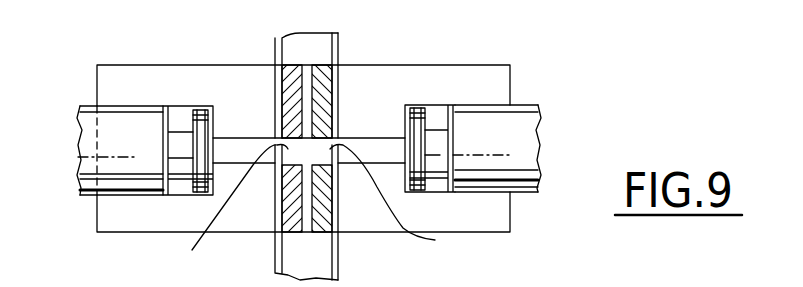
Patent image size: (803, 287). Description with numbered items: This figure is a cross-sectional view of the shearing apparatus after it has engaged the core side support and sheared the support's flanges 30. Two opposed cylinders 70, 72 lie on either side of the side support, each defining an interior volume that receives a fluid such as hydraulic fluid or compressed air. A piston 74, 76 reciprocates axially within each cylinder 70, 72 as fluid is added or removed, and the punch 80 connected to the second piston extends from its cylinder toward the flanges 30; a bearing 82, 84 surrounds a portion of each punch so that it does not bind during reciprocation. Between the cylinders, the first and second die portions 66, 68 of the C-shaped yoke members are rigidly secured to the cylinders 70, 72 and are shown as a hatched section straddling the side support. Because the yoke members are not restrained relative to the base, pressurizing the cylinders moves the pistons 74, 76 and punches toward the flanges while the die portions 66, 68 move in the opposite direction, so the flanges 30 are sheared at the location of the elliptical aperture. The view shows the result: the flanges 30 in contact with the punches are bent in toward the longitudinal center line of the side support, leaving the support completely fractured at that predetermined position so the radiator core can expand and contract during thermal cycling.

The flanges 30 is at (307, 212).
The die portion 66 is at (294, 65).
The die portion 68 is at (320, 80).
The cylinder 70 is at (93, 168).
The cylinder 72 is at (522, 147).
The piston 74 is at (157, 125).
The piston 76 is at (453, 128).
The punch 80 is at (360, 140).
The bearing 82 is at (200, 112).
The bearing 84 is at (422, 110).